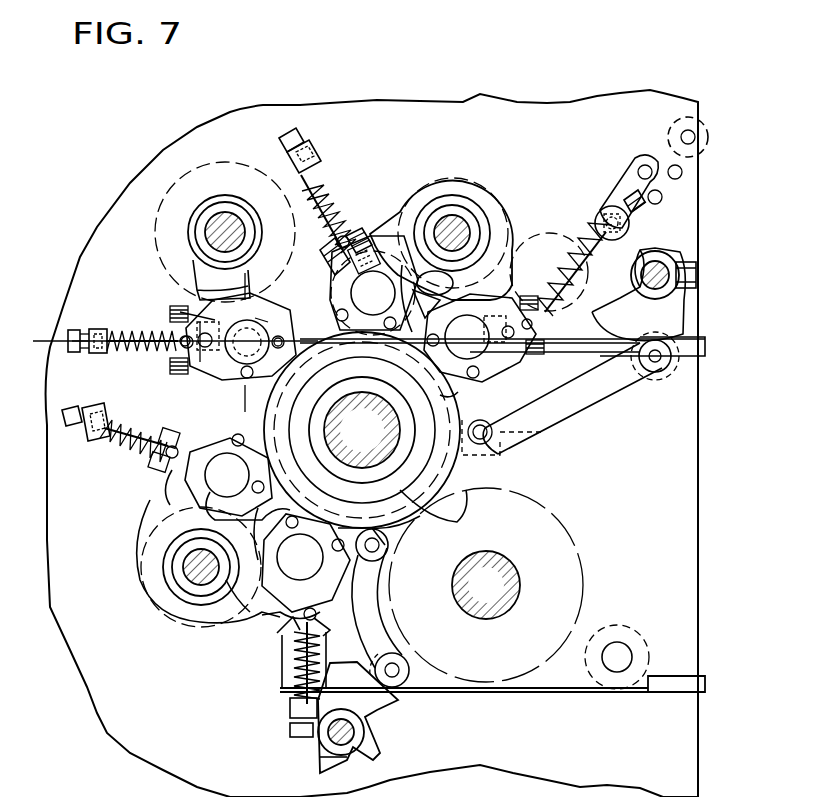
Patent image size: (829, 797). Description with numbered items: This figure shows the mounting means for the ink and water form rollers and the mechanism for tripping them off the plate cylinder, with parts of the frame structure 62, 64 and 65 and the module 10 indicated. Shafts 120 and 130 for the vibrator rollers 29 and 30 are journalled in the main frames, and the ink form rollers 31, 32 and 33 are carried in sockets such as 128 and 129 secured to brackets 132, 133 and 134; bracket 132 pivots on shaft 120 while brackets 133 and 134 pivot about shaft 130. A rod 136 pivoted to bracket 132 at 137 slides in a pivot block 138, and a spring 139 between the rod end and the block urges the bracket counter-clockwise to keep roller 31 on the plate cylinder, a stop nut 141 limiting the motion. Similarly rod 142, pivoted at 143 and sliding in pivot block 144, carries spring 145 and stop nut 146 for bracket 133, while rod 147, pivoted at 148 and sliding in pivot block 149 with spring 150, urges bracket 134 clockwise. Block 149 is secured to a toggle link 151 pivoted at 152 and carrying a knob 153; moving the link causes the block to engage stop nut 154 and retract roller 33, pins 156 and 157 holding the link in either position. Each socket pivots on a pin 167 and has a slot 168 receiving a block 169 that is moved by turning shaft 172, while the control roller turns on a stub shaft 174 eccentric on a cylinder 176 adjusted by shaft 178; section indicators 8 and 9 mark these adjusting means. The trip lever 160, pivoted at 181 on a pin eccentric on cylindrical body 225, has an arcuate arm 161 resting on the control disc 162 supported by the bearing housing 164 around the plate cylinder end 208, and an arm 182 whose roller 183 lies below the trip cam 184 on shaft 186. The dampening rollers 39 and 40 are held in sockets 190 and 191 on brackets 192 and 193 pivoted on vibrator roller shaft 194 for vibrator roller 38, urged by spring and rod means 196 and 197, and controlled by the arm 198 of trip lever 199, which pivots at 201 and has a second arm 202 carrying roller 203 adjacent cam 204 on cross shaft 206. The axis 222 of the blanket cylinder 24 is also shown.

The section line 8- 8 is at (243, 284).
The section line 9- 9 is at (43, 338).
The frame plate 10 is at (446, 391).
The main drive gear 24 is at (566, 550).
The vibrator roller 29 is at (201, 178).
The vibrator roller 30 is at (465, 178).
The ink form roller 31 is at (258, 300).
The ink form roller 32 is at (380, 268).
The ink form roller 33 is at (500, 362).
The vibrator roller 38 is at (142, 566).
The form dampening roller 39 is at (219, 475).
The form dampening roller 40 is at (306, 567).
The bearing 62 is at (638, 640).
The cross bar 64 is at (708, 346).
The bracket 65 is at (684, 686).
The vibrator shaft 120 is at (213, 228).
The form roller socket 128 is at (222, 318).
The form roller socket 129 is at (366, 255).
The vibrator roller shaft 130 is at (465, 226).
The bracket 132 is at (204, 276).
The bracket 133 is at (405, 232).
The bracket 134 is at (492, 260).
The rod 136 is at (142, 348).
The pivot connection 137 is at (183, 346).
The pivot block 138 is at (97, 330).
The spring 139 is at (120, 330).
The stop nut 141 is at (68, 344).
The rod 142 is at (317, 182).
The pivot connection 143 is at (336, 242).
The pivot block 144 is at (292, 184).
The spring 145 is at (328, 205).
The stop nut 146 is at (288, 140).
The rod 147 is at (600, 250).
The pivot connection 148 is at (530, 326).
The pivot block 149 is at (628, 226).
The spring 150 is at (618, 286).
The toggle link 151 is at (632, 198).
The pivot 152 is at (643, 165).
The knob 153 is at (705, 131).
The stop nut 154 is at (646, 208).
The pin 156 is at (682, 170).
The pin 157 is at (662, 195).
The trip lever 160 is at (592, 394).
The arcuate arm 161 is at (410, 369).
The control disc 162 is at (440, 470).
The plate cylinder bearing housing 164 is at (395, 478).
The pin 167 is at (273, 336).
The slot 168 is at (203, 361).
The block 169 is at (212, 358).
The shaft 172 is at (185, 350).
The stub shaft 174 is at (262, 330).
The cylinder 176 is at (362, 430).
The shaft 178 is at (176, 316).
The pivot pin 181 is at (480, 445).
The arm 182 is at (630, 378).
The roller 183 is at (672, 366).
The trip cam 184 is at (668, 318).
The shaft 186 is at (696, 272).
The socket 190 is at (200, 484).
The socket 191 is at (224, 600).
The bracket 192 is at (176, 523).
The bracket 193 is at (252, 620).
The vibrator roller shaft 194 is at (186, 572).
The spring and rod means 196 is at (128, 440).
The spring and rod means 197 is at (300, 656).
The arm 198 is at (200, 592).
The trip lever 199 is at (378, 524).
The pivot 201 is at (386, 560).
The second arm 202 is at (388, 600).
The roller 203 is at (408, 665).
The cam 204 is at (400, 702).
The cross shaft 206 is at (358, 733).
The main shaft 208 is at (362, 430).
The axis of the blanket cylinder 222 is at (486, 585).
The cylindrical body 225 is at (542, 432).